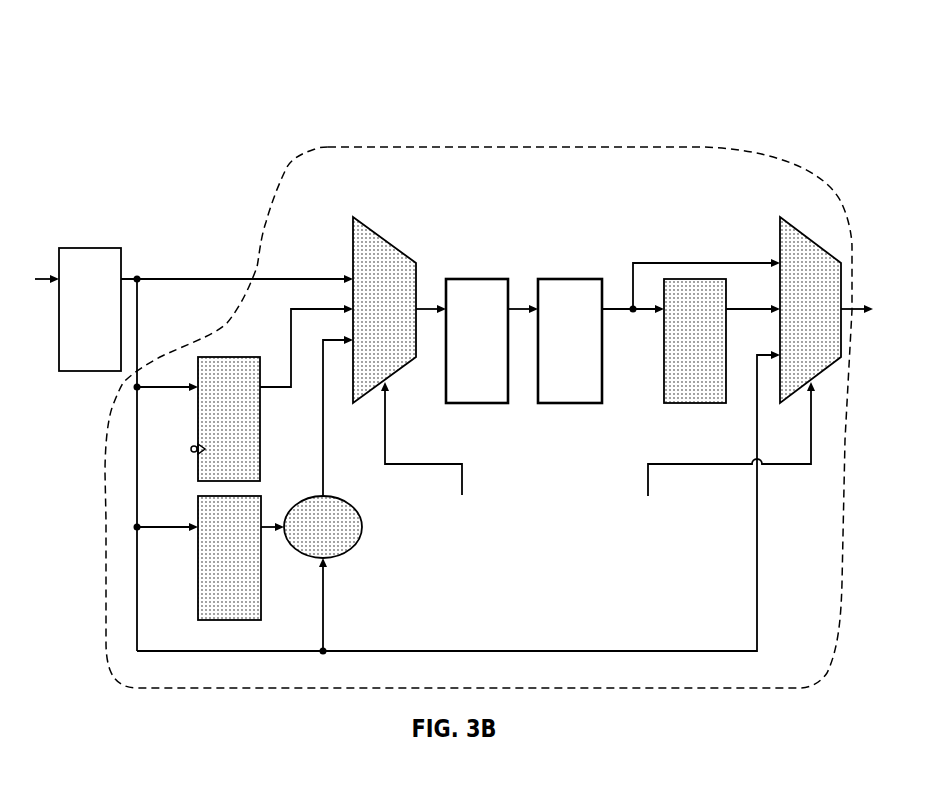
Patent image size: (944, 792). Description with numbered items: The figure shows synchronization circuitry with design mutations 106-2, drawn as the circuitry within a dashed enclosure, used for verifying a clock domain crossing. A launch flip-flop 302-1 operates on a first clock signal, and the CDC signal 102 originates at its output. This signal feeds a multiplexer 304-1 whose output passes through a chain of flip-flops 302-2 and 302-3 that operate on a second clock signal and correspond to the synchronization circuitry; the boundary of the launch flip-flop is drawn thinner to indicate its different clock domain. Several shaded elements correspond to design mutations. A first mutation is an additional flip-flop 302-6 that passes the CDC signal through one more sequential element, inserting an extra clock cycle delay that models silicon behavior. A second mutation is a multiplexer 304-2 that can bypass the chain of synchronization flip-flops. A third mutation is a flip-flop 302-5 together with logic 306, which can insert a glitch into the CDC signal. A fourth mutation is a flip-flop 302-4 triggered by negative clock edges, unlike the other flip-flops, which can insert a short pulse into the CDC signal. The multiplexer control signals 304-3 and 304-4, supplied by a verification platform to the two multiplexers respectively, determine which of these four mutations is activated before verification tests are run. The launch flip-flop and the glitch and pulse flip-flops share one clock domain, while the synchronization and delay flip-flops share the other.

The synchronization circuitry with design mutations 106-2 is at (328, 147).
The flip-flop 302-1 is at (78, 309).
The CDC signal 102 is at (237, 453).
The flip-flop 302-4 is at (272, 393).
The flip-flop 302-5 is at (241, 558).
The logic 306 is at (458, 495).
The multiplexer 304-1 is at (399, 310).
The multiplexer control signal 304-3 is at (443, 466).
The flip-flop 302-2 is at (492, 341).
The flip-flop 302-3 is at (659, 331).
The flip-flop 302-6 is at (722, 341).
The multiplexer 304-2 is at (826, 310).
The multiplexer control signal 304-4 is at (710, 466).